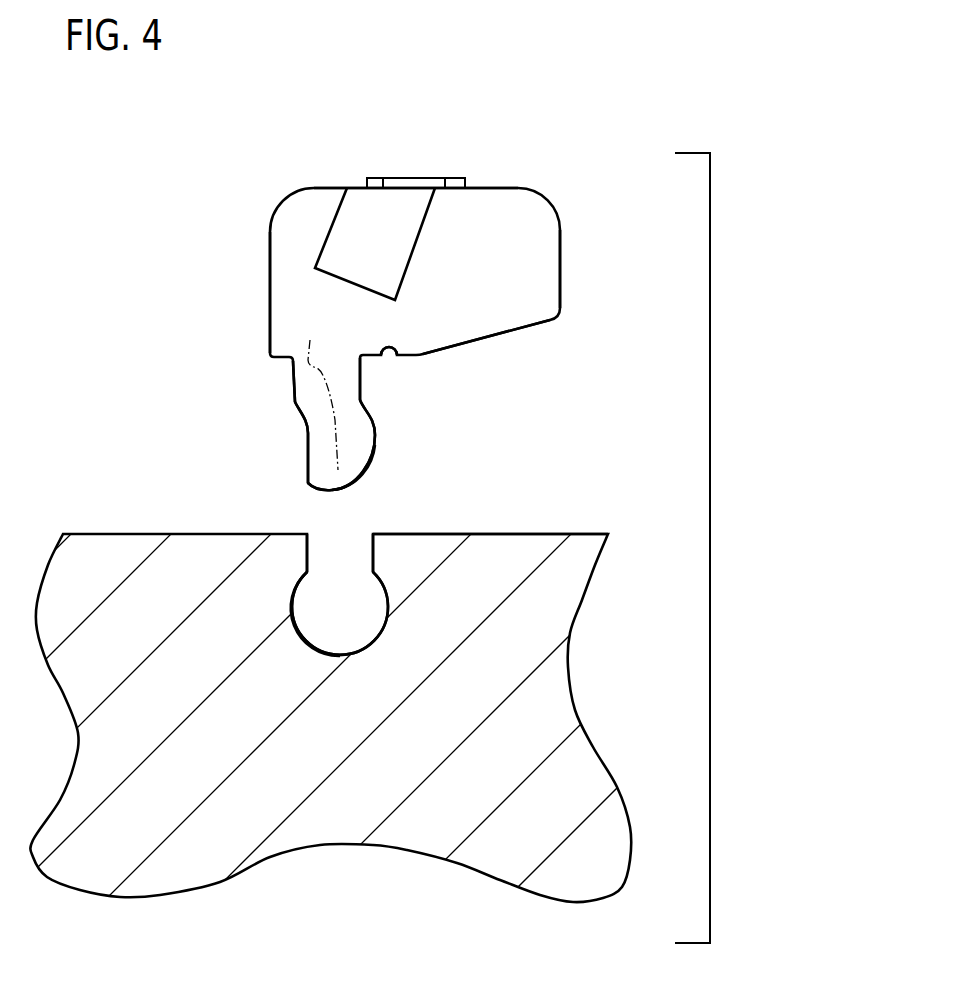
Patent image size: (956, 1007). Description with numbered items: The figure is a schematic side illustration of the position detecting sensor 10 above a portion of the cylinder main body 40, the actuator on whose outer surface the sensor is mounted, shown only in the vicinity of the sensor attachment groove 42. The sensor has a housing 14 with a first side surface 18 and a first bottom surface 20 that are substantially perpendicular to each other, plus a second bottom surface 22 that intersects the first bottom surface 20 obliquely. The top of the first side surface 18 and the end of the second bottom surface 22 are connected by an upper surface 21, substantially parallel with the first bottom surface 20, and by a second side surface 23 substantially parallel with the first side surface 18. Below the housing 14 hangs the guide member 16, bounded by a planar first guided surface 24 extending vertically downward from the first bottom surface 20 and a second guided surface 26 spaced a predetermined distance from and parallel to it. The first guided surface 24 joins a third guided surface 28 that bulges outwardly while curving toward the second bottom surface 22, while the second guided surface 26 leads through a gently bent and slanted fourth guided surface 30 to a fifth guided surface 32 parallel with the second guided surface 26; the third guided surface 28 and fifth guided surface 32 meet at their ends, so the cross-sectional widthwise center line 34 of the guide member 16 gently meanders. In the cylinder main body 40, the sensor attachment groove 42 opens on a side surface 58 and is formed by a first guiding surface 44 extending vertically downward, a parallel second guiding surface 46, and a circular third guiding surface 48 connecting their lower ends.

The position detecting sensor 10 is at (347, 163).
The housing 14 is at (535, 254).
The guide member 16 is at (374, 427).
The first side surface 18 is at (270, 257).
The first bottom surface 20 is at (394, 364).
The upper surface 21 is at (498, 187).
The second bottom surface 22 is at (472, 343).
The second side surface 23 is at (560, 281).
The first guided surface 24 is at (361, 395).
The second guided surface 26 is at (293, 377).
The third guided surface 28 is at (372, 460).
The fourth guided surface 30 is at (296, 402).
The fifth guided surface 32 is at (308, 453).
The cross-sectional widthwise center line 34 is at (317, 393).
The cylinder main body 40 is at (578, 578).
The sensor attachment groove 42 is at (352, 638).
The first guiding surface 44 is at (374, 553).
The second guiding surface 46 is at (306, 553).
The third guiding surface 48 is at (306, 640).
The side surface 58 is at (486, 532).